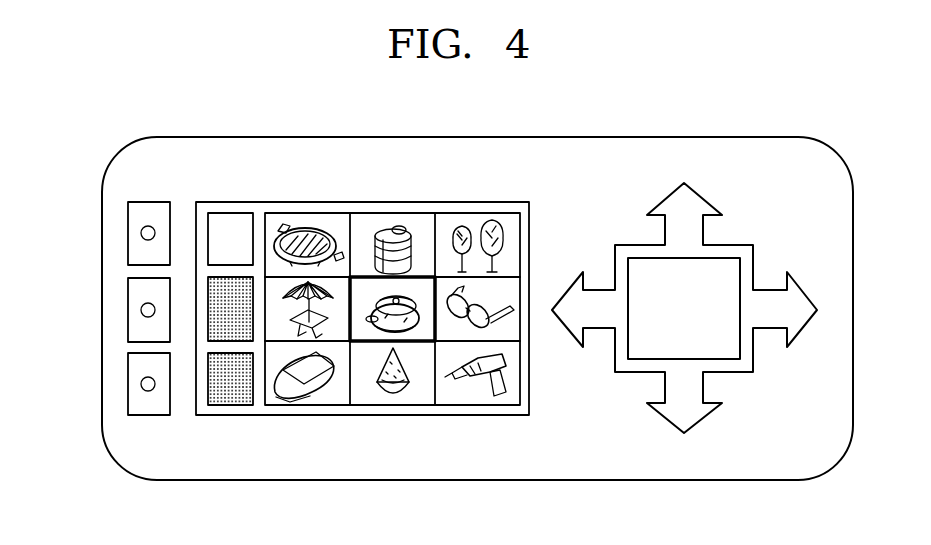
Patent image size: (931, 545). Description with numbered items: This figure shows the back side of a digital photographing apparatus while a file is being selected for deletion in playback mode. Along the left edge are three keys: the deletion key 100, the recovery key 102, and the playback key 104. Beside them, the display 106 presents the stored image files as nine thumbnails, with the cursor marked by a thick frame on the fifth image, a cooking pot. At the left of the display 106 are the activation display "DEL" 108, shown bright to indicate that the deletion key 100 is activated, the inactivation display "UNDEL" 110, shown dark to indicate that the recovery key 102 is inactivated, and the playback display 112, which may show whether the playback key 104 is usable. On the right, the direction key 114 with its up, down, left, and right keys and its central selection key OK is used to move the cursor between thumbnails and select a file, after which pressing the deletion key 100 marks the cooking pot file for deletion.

The deletion key 100 is at (128, 233).
The recovery key 102 is at (128, 310).
The playback key 104 is at (128, 384).
The display 106 is at (364, 202).
The activation display "DEL" 108 is at (232, 213).
The inactivation display "UNDEL" 110 is at (208, 312).
The playback display 112 is at (228, 407).
The direction key 114 is at (630, 245).